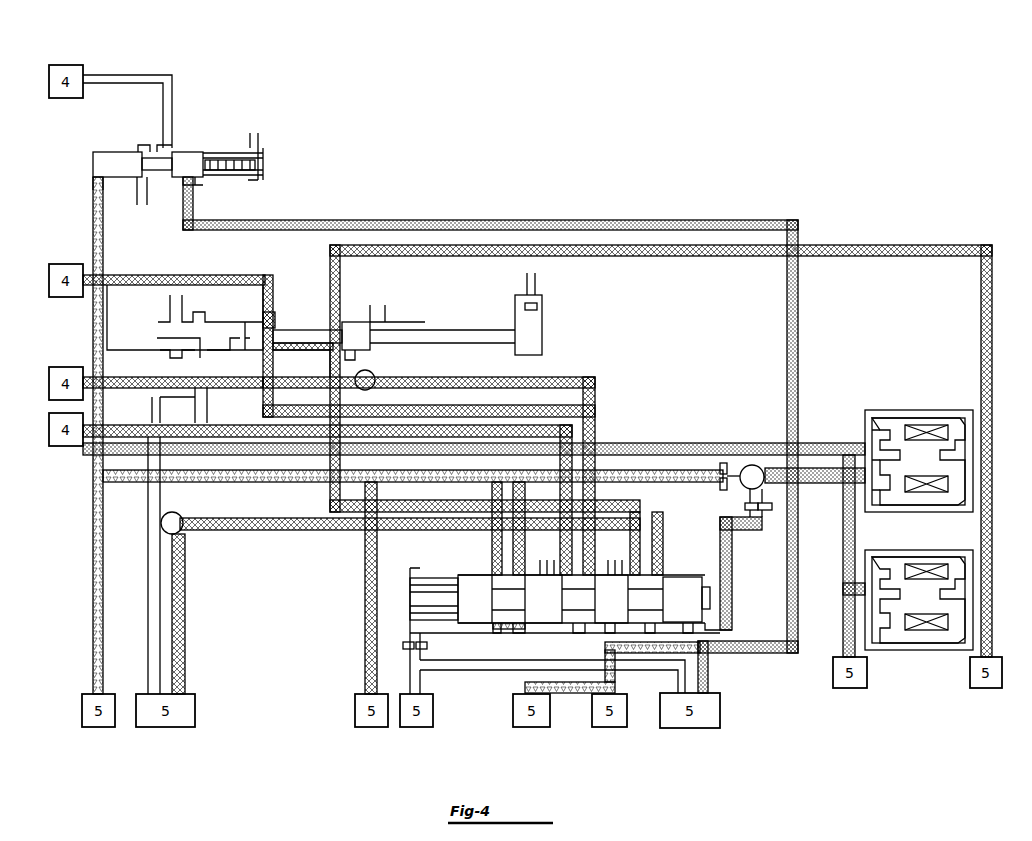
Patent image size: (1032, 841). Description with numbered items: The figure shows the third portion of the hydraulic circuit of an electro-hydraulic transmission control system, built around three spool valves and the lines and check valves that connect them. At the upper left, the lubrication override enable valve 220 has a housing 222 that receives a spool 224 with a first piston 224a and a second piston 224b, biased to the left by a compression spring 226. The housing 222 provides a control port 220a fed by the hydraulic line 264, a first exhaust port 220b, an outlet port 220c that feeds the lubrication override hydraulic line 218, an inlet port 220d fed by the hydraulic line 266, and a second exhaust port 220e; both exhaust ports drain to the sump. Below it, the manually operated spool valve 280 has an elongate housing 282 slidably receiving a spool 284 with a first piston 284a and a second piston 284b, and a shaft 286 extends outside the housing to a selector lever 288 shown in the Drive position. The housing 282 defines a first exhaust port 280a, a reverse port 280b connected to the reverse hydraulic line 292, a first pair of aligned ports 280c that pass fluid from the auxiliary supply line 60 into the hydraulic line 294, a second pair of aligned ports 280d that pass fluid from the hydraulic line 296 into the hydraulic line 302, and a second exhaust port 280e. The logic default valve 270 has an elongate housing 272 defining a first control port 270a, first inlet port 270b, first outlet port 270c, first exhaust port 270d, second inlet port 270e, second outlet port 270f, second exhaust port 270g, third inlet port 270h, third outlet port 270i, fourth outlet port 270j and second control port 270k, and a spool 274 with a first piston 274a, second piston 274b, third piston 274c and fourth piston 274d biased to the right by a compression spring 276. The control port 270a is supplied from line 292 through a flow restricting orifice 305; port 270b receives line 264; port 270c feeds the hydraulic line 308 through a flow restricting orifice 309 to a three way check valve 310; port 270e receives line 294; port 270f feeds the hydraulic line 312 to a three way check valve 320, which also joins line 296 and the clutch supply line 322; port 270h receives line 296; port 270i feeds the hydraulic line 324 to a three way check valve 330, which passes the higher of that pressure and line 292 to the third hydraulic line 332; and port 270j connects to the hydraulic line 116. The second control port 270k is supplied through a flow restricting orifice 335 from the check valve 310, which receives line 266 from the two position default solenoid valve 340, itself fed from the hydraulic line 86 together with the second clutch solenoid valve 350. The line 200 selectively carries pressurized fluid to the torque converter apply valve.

The auxiliary supply line 60 is at (205, 280).
The hydraulic line 86 is at (634, 444).
The hydraulic line 116 is at (570, 695).
The line 200 is at (136, 430).
The lubrication override hydraulic line 218 is at (122, 75).
The lubrication override enable valve 220 is at (178, 154).
The control port 220a is at (97, 192).
The first exhaust port 220b is at (140, 205).
The outlet port 220c is at (163, 148).
The inlet port 220d is at (190, 182).
The second exhaust port 220e is at (258, 145).
The housing 222 is at (253, 184).
The spool 224 is at (240, 165).
The first piston 224a is at (117, 160).
The second piston 224b is at (197, 158).
The compression spring 226 is at (255, 170).
The hydraulic line 264 is at (210, 480).
The hydraulic line 266 is at (374, 225).
The spool or logic default valve 270 is at (548, 588).
The first control port 270a is at (413, 646).
The first inlet port 270b is at (500, 574).
The first outlet port 270c is at (519, 574).
The first exhaust port 270d is at (545, 574).
The second inlet port 270e is at (570, 625).
The second outlet port 270f is at (590, 628).
The second exhaust port 270g is at (613, 574).
The third inlet port 270h is at (640, 562).
The third outlet port 270i is at (658, 568).
The fourth outlet port 270j is at (700, 636).
The second control port 270k is at (732, 575).
The elongate housing 272 is at (432, 572).
The spool 274 is at (519, 604).
The first piston 274a is at (495, 610).
The second piston 274b is at (562, 610).
The third piston 274c is at (630, 610).
The fourth piston 274d is at (700, 610).
The compression spring 276 is at (410, 578).
The manually operated spool valve 280 is at (366, 347).
The first exhaust port 280a is at (168, 312).
The reverse port 280b is at (180, 345).
The first pair of aligned ports 280c is at (270, 320).
The second pair of aligned ports 280d is at (332, 357).
The second exhaust port 280e is at (385, 317).
The elongate housing 282 is at (244, 322).
The spool 284 is at (300, 338).
The first piston 284a is at (235, 388).
The second piston 284b is at (350, 323).
The shaft 286 is at (475, 336).
The selector lever 288 is at (545, 325).
The reverse hydraulic line 292 is at (152, 488).
The hydraulic line 294 is at (460, 396).
The hydraulic line 296 is at (150, 380).
The hydraulic line 302 is at (893, 248).
The flow restricting orifice 305 is at (430, 645).
The hydraulic line 308 is at (662, 472).
The flow restricting orifice 309 is at (722, 465).
The three way check valve 310 is at (756, 465).
The hydraulic line 312 is at (597, 390).
The three way check valve 320 is at (377, 375).
The clutch supply line 322 is at (365, 680).
The hydraulic line 324 is at (305, 522).
The three way check valve 330 is at (183, 530).
The third hydraulic line 332 is at (185, 604).
The flow restricting orifice 335 is at (775, 508).
The default solenoid valve 340 is at (903, 408).
The second clutch solenoid valve 350 is at (903, 655).